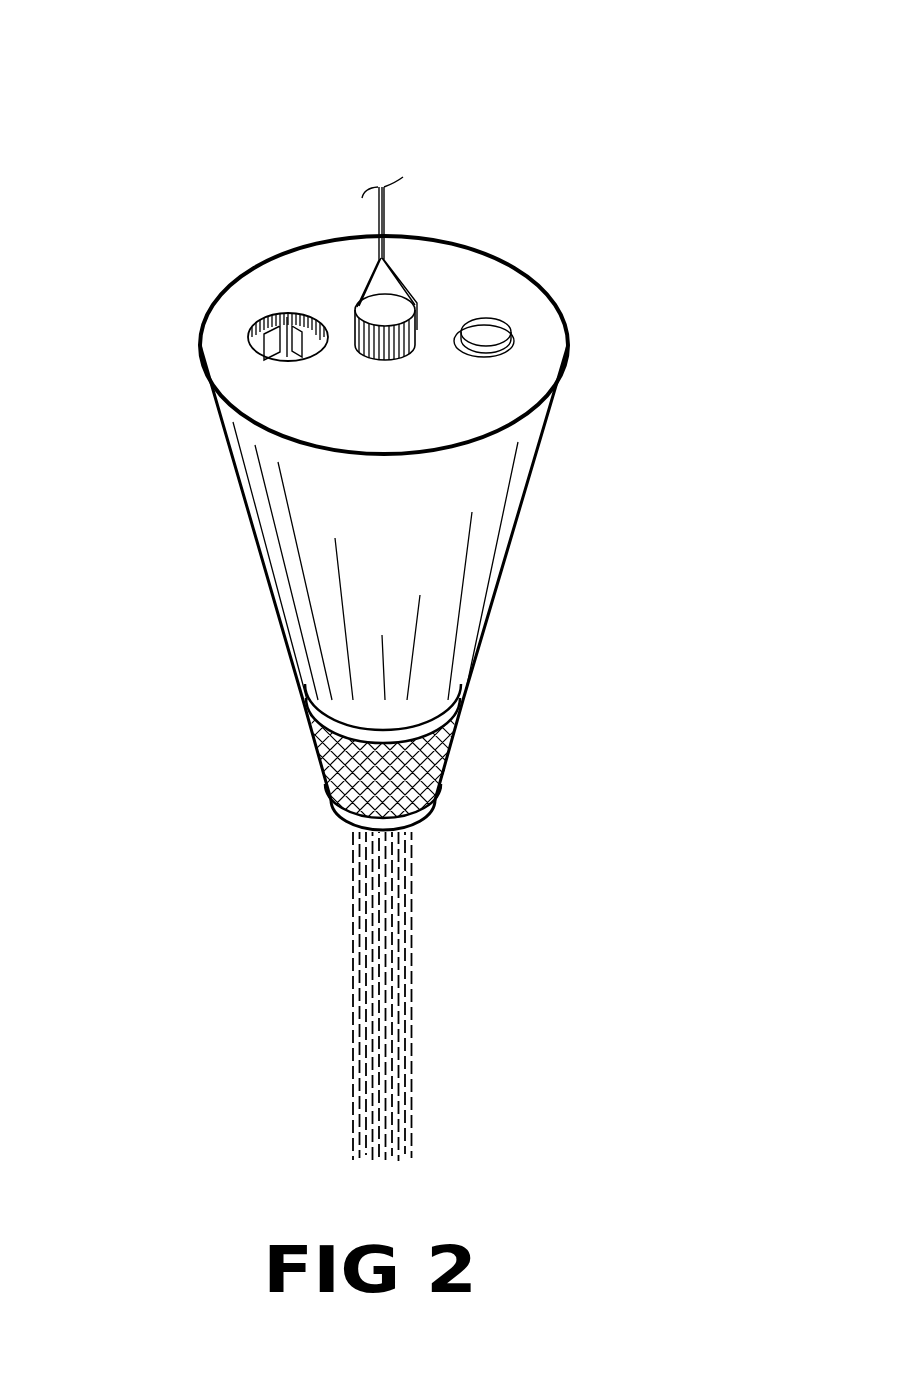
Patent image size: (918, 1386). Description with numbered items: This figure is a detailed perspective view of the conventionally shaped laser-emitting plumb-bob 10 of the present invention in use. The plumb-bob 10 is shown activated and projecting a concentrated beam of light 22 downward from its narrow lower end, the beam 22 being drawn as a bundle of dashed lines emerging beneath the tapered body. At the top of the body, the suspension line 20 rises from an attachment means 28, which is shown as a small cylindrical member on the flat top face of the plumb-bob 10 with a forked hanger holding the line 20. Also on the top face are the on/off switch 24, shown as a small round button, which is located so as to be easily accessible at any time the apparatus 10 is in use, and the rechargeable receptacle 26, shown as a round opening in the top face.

The laser-emitting plumb-bob 10 is at (383, 415).
The line 20 is at (383, 220).
The beam 22 is at (418, 997).
The switch 24 is at (487, 333).
The rechargeable receptacle 26 is at (287, 323).
The attachment means 28 is at (368, 313).